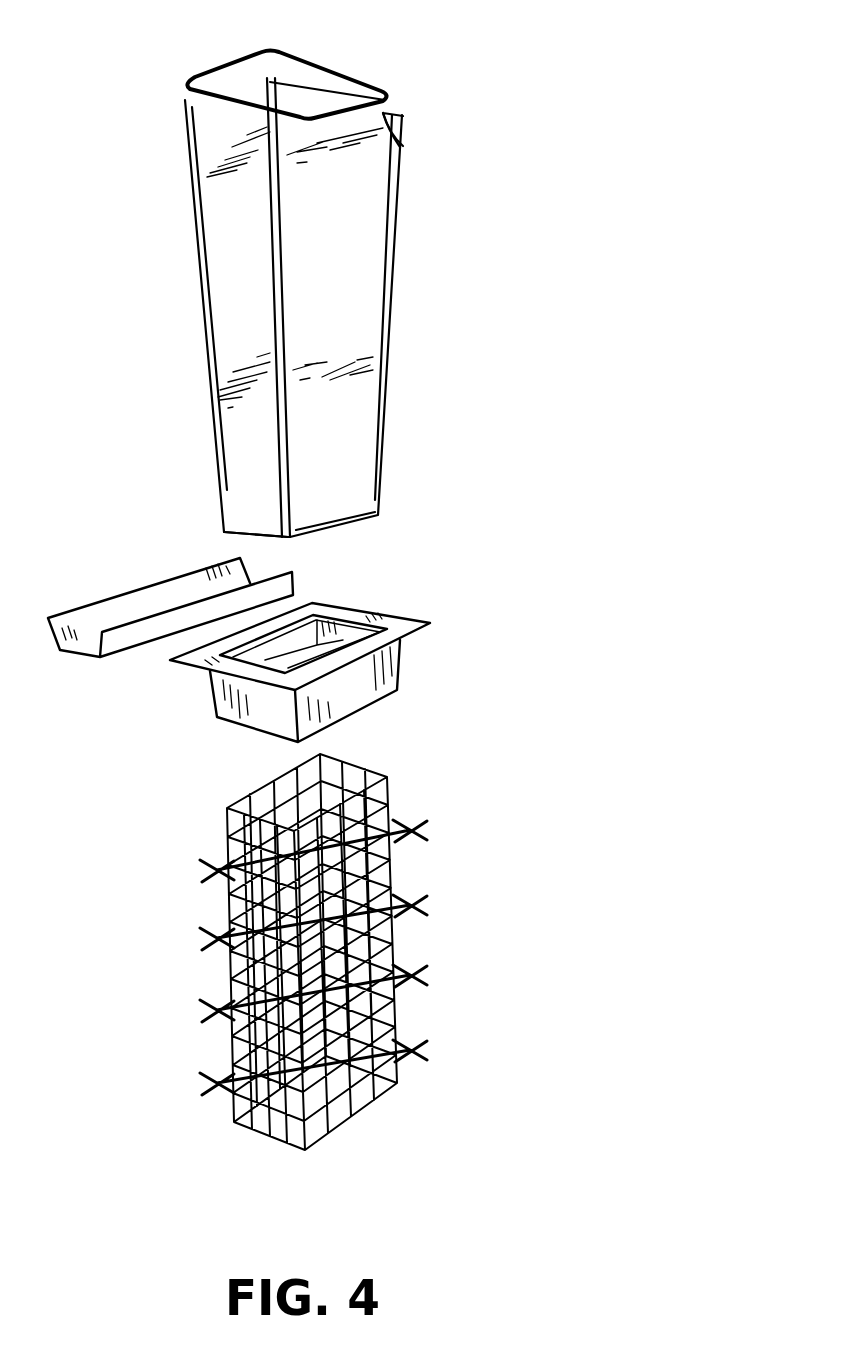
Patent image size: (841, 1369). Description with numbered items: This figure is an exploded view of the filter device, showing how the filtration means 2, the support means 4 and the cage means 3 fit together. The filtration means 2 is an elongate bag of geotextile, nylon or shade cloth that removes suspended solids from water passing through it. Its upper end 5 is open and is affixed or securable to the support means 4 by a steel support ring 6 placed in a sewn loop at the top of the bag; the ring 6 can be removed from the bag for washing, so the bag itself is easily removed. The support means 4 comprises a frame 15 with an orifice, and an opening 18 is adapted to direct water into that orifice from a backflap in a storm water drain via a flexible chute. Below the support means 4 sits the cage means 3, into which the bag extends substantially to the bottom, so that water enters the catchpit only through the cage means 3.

The filtration means 2 is at (362, 342).
The cage means 3 is at (355, 950).
The support means 4 is at (435, 675).
The upper end 5 is at (397, 140).
The steel support ring 6 is at (370, 52).
The frame 15 is at (243, 702).
The opening 18 is at (407, 627).